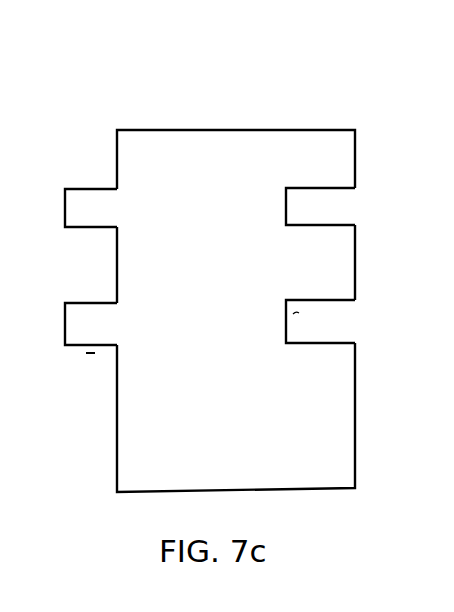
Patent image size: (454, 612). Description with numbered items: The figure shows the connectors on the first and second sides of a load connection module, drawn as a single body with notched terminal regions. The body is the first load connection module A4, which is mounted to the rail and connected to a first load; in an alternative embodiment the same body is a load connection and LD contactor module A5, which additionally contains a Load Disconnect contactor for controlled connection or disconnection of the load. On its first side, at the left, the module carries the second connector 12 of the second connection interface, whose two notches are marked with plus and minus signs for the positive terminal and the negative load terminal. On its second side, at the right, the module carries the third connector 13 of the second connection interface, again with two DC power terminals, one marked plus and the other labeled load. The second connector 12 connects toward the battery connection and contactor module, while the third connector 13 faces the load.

The second connector 12 is at (75, 131).
The third connector 13 is at (391, 116).
The first load connection module A4 is at (236, 261).
The load connection and LD contactor module A5 is at (181, 148).